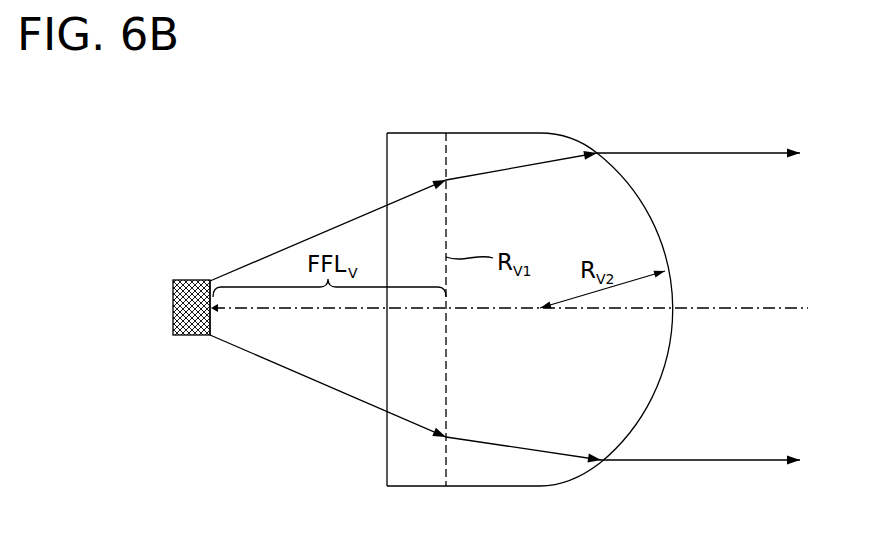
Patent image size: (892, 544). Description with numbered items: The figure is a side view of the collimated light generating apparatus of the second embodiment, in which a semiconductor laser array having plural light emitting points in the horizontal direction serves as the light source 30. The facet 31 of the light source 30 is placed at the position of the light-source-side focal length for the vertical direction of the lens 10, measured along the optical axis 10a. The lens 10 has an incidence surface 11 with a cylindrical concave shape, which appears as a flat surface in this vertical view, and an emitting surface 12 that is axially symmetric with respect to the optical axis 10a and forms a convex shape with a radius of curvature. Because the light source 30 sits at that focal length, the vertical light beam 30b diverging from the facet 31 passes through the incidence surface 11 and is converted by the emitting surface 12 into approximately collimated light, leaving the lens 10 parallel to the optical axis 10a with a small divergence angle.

The lens 10 is at (562, 277).
The optical axis 10a is at (534, 309).
The incidence surface 11 is at (446, 213).
The emitting surface 12 is at (660, 230).
The light source 30 is at (203, 305).
The vertical light beam 30b is at (278, 251).
The facet 31 is at (211, 323).